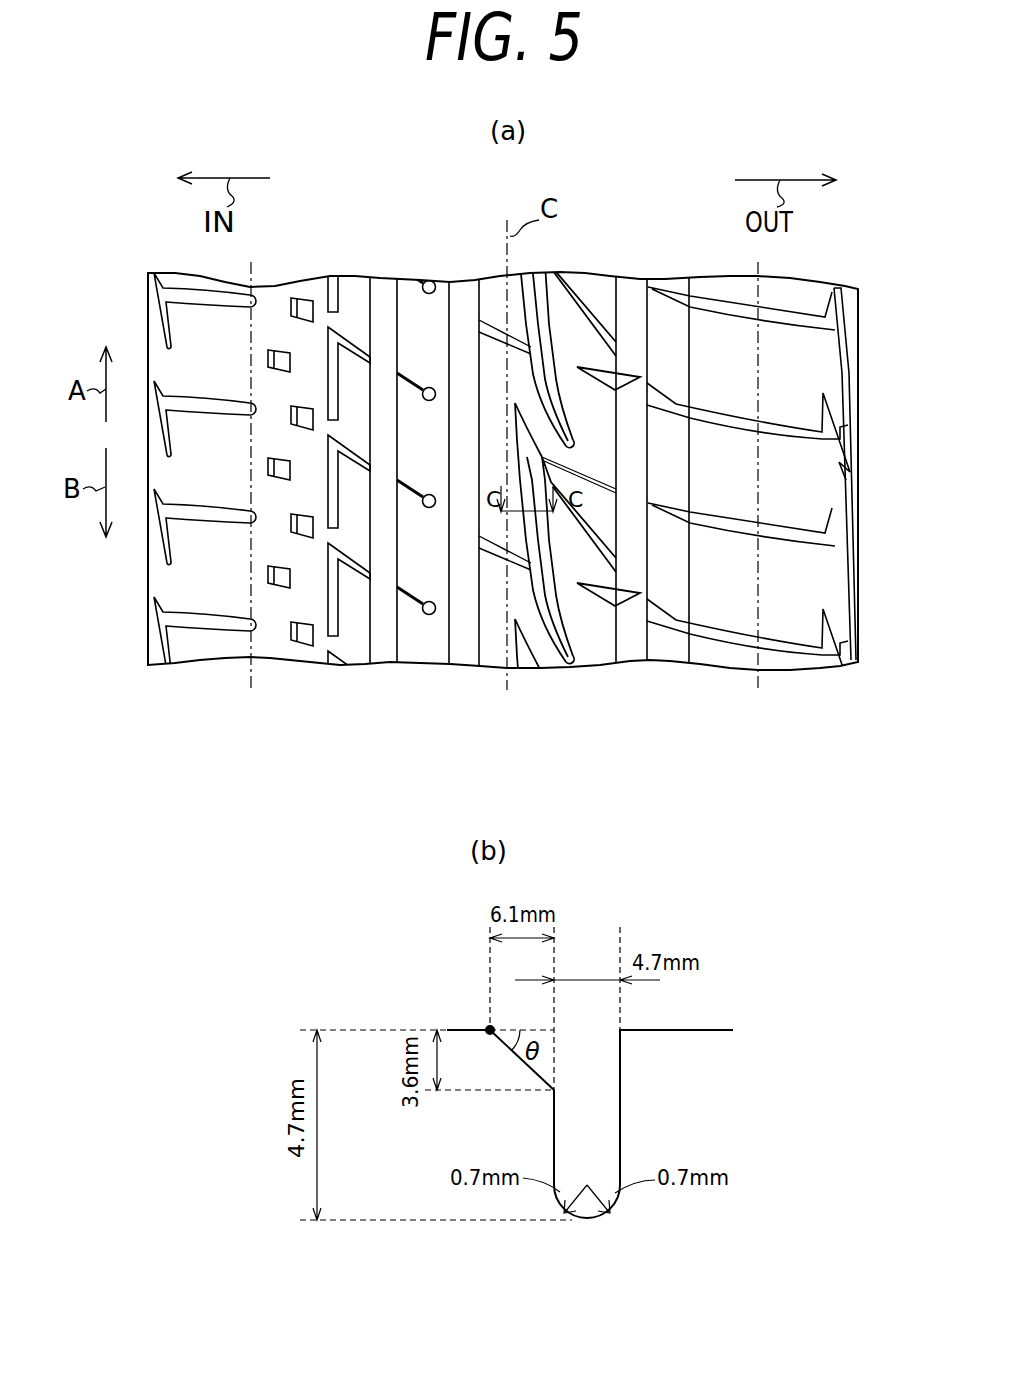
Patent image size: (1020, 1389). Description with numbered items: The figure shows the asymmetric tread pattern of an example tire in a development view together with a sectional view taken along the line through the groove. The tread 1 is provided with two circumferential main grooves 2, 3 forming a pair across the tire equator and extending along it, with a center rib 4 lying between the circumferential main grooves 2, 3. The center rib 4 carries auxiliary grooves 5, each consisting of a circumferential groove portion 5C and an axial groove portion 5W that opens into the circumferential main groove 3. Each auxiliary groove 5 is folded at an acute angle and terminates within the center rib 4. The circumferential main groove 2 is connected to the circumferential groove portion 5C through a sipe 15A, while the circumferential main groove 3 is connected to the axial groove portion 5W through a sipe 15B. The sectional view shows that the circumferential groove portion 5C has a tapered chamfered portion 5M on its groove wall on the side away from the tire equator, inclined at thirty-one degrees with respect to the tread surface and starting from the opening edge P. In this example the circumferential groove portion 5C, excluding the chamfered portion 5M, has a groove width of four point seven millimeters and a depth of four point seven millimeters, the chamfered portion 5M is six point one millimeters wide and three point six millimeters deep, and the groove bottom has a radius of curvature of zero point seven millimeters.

The tread 1 is at (820, 258).
The circumferential main groove 2 is at (462, 297).
The circumferential main groove 3 is at (640, 292).
The center rib 4 is at (600, 295).
The auxiliary groove 5 is at (552, 631).
The circumferential groove portion 5C is at (560, 645).
The axial groove portion 5W is at (625, 615).
The chamfered portion 5M is at (533, 1077).
The sipe 15A is at (505, 565).
The sipe 15B is at (590, 476).
The opening edge P is at (488, 1028).